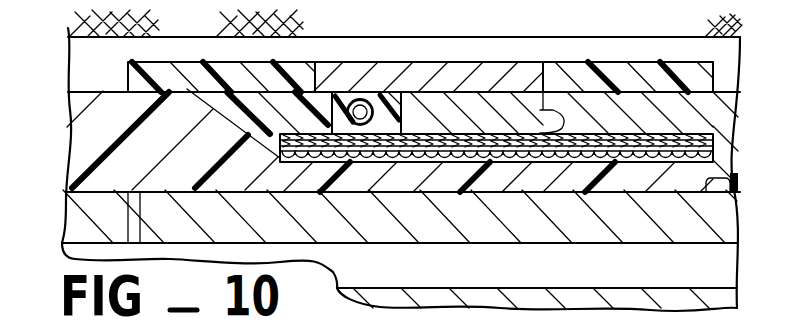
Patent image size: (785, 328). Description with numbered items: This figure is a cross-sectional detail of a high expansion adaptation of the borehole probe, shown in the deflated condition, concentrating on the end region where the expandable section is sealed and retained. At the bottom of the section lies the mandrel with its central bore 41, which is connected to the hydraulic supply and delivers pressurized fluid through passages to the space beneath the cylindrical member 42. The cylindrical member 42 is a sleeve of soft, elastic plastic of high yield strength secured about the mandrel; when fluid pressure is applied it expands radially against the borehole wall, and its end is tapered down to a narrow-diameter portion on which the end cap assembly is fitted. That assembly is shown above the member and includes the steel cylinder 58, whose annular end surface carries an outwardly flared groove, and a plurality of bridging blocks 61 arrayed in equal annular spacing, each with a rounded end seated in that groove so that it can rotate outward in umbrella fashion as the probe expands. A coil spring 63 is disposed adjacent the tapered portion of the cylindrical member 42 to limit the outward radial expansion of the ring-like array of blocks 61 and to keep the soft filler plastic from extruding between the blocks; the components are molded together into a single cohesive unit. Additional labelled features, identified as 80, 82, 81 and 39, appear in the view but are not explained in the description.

The fastening assembly 80 is at (111, 67).
The outer skin layer 82 is at (230, 72).
The intermediate layer 81 is at (480, 72).
The coil spring 63 is at (363, 100).
The bridging block 61 is at (428, 98).
The steel cylinder 58 is at (600, 108).
The cylindrical member 42 is at (90, 133).
The base plate 39 is at (77, 210).
The central bore 41 is at (353, 272).